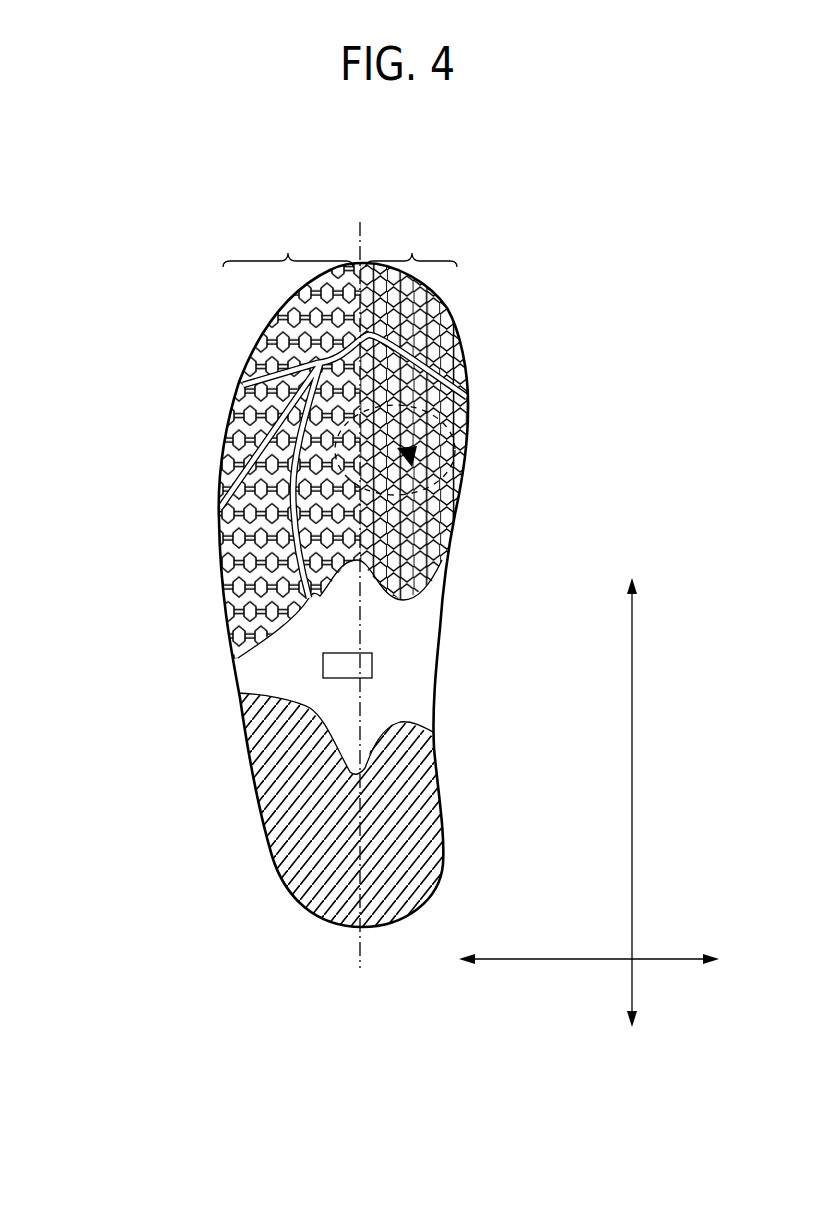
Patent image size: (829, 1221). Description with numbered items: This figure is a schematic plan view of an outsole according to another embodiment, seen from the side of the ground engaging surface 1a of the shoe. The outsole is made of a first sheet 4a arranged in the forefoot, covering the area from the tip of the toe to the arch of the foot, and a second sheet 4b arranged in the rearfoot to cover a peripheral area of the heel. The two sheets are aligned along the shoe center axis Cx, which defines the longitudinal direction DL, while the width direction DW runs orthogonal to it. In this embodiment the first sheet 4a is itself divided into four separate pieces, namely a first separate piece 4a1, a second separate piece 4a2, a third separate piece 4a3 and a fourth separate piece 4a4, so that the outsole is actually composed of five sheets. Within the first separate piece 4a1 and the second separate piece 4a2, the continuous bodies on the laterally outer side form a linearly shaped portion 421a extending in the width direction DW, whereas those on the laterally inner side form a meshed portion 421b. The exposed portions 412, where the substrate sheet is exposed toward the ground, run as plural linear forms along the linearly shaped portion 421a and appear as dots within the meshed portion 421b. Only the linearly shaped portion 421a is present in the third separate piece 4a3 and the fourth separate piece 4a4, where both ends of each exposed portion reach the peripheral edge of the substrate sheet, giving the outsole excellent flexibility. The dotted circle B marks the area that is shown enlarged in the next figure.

The ground engaging surface 1a is at (137, 176).
The first sheet 4a is at (342, 453).
The first separate piece 4a1 is at (436, 292).
The second separate piece 4a2 is at (457, 408).
The third separate piece 4a3 is at (222, 450).
The fourth separate piece 4a4 is at (221, 522).
The second sheet 4b is at (407, 800).
The exposed portions 412 is at (280, 326).
The linearly shaped portion 421a is at (288, 245).
The meshed portion 421b is at (411, 245).
The dotted circle B is at (467, 498).
The shoe center axis Cx is at (371, 582).
The longitudinal direction DL is at (657, 802).
The width direction DW is at (589, 942).